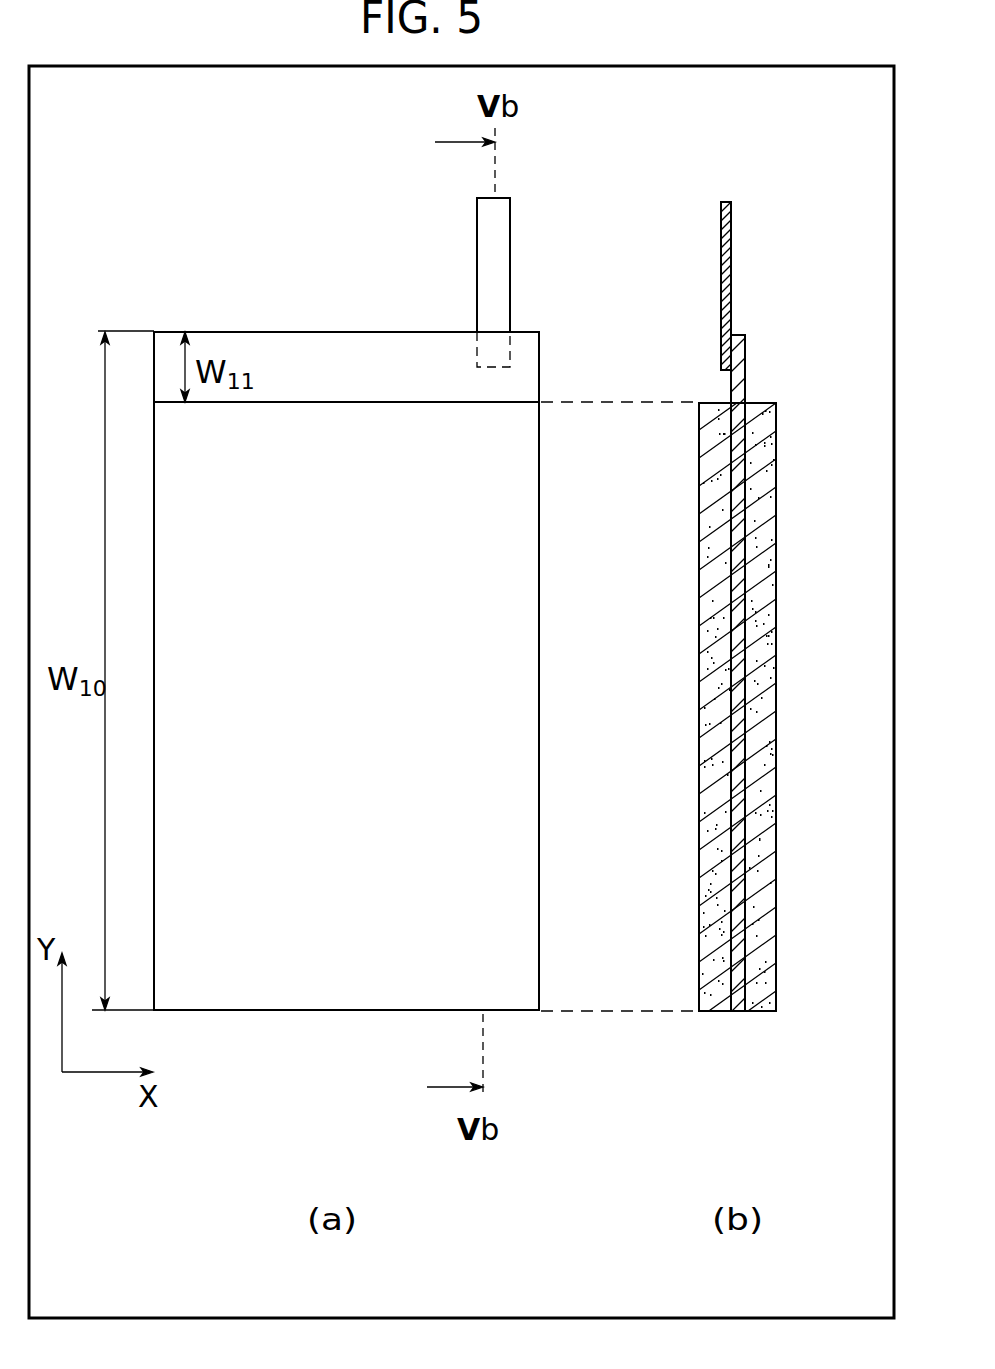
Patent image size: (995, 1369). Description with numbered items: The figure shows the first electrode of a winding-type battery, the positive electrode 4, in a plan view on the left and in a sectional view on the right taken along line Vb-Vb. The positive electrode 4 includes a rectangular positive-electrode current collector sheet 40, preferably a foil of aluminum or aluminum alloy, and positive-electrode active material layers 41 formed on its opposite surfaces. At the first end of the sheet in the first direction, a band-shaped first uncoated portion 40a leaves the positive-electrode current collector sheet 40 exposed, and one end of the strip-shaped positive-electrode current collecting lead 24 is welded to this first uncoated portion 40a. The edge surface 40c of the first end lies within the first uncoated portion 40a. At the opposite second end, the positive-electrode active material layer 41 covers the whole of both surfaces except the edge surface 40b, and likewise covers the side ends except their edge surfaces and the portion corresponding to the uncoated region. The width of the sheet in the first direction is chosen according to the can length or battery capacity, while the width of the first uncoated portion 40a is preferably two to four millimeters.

The positive electrode 4 is at (218, 192).
The positive-electrode current collecting lead 24 is at (490, 242).
The positive-electrode current collector sheet 40 is at (735, 720).
The first uncoated portion 40a is at (303, 352).
The edge surface of the second end 40b is at (730, 1014).
The edge surface of the first end 40c is at (743, 333).
The positive-electrode active material layer 41 is at (320, 1011).